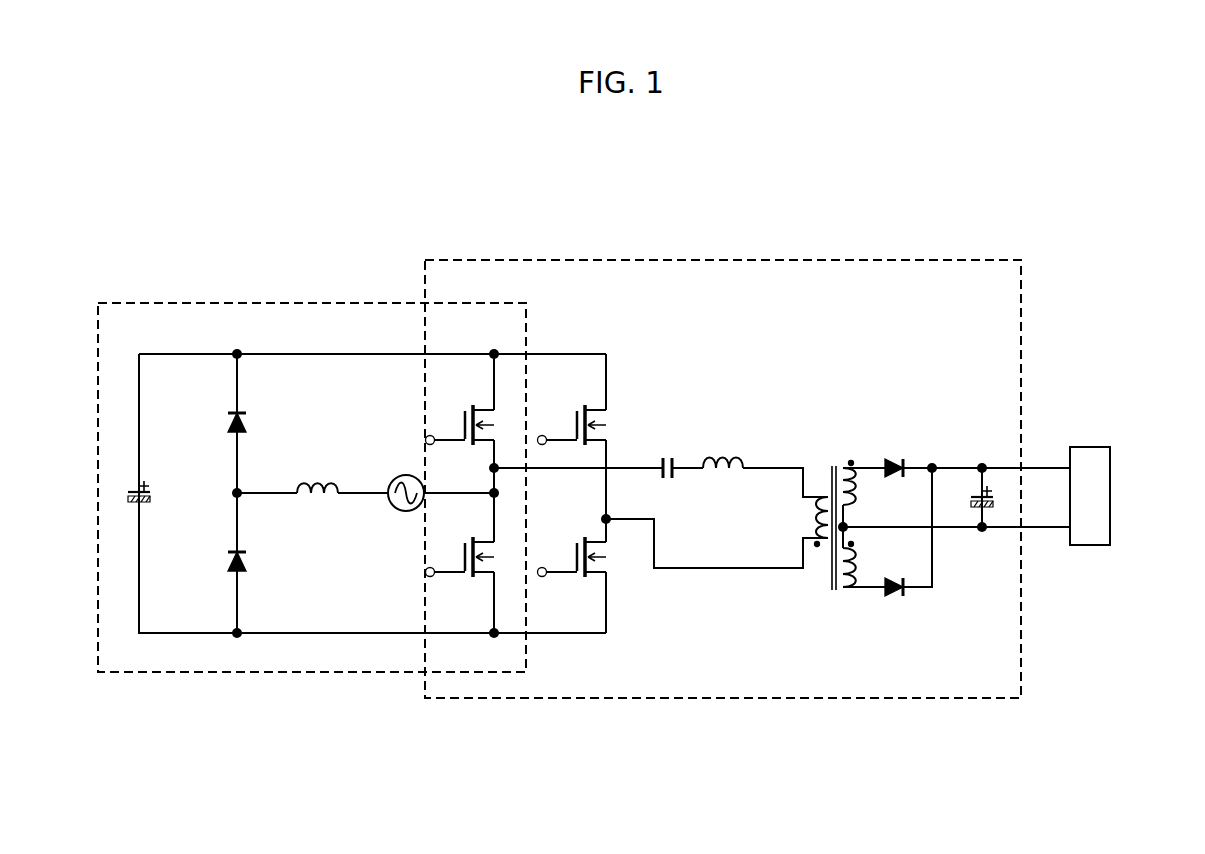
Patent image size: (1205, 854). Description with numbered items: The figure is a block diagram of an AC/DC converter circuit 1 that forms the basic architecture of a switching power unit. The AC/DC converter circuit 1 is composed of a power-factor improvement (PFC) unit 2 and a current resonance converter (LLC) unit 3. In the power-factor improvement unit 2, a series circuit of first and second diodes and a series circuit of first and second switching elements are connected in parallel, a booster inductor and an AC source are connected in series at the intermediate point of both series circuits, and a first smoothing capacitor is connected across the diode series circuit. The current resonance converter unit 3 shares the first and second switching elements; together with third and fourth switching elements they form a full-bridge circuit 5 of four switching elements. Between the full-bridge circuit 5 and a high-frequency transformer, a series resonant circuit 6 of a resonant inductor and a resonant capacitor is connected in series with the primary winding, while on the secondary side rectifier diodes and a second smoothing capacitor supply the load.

The AC/DC converter circuit 1 is at (1052, 336).
The power-factor improvement (PFC) unit 2 is at (152, 303).
The current resonance converter (LLC) unit 3 is at (716, 260).
The full-bridge circuit 5 is at (551, 311).
The series resonant circuit 6 is at (745, 431).